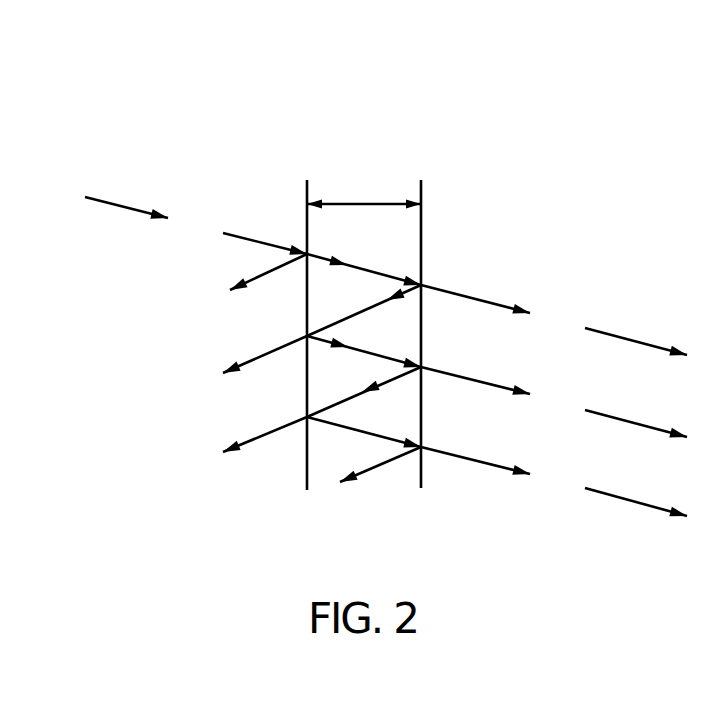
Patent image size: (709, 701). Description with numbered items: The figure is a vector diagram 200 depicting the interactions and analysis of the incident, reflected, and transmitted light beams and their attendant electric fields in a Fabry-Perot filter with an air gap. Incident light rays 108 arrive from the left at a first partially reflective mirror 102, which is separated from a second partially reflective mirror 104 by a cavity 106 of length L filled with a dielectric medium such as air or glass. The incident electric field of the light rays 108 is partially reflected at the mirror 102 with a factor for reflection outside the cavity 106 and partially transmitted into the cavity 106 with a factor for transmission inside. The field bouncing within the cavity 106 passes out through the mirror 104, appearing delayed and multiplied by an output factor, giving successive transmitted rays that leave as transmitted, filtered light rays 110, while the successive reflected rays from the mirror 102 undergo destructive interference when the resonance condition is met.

The vector diagram 200 is at (230, 80).
The light rays 108 is at (118, 205).
The mirror 102 is at (307, 228).
The mirror 104 is at (421, 228).
The cavity 106 is at (368, 145).
The transmitted, filtered light rays 110 is at (618, 337).